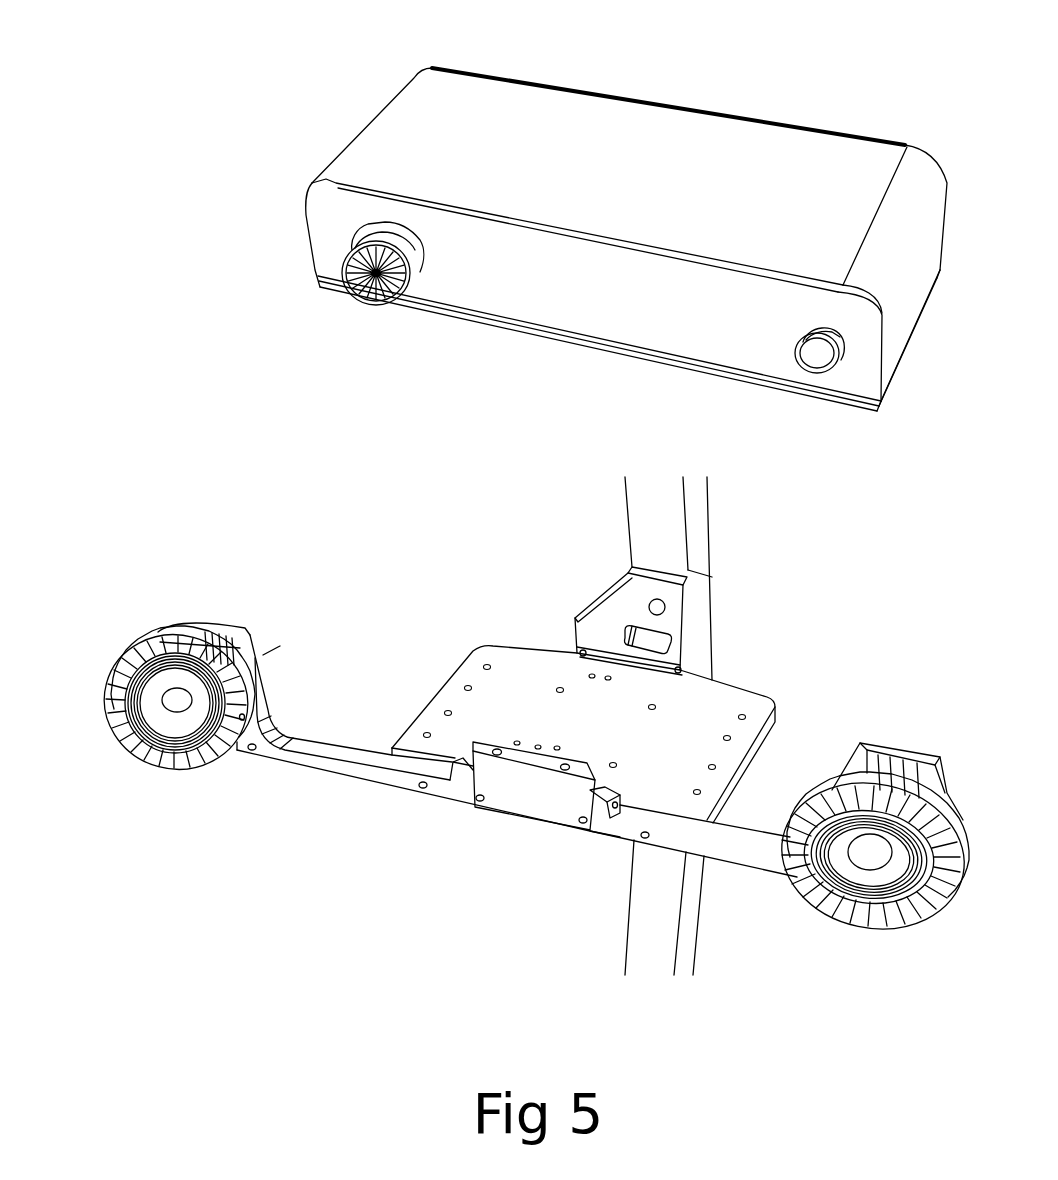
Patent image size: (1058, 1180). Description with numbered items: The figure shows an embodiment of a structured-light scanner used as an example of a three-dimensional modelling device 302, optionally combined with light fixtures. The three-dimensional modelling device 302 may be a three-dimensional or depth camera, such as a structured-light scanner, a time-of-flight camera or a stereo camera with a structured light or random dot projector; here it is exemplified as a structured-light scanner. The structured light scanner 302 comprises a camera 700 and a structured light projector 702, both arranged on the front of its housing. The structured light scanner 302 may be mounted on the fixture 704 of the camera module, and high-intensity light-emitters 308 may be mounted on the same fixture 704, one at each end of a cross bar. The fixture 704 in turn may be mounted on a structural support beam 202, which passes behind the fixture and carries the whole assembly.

The 3D modelling device 302 is at (653, 97).
The camera 700 is at (366, 303).
The structured light projector 702 is at (846, 365).
The fixture 704 is at (526, 648).
The high-intensity light-emitters 308 is at (97, 713).
The structural support beam 202 is at (625, 925).